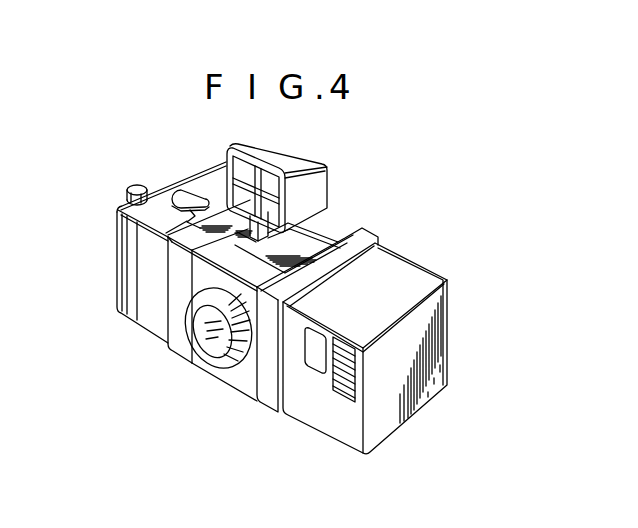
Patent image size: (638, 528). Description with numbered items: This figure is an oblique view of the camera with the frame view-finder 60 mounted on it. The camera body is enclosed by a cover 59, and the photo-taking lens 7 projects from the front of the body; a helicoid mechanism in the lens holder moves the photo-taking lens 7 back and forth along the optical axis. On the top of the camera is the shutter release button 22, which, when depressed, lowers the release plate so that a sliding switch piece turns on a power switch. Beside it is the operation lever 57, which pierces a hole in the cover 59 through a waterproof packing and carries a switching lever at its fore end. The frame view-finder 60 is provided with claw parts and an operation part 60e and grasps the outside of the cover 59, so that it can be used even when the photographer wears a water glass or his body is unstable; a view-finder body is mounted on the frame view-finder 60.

The photo-taking lens 7 is at (215, 348).
The shutter release button 22 is at (135, 185).
The operation lever 57 is at (181, 194).
The cover 59 is at (433, 334).
The frame view-finder 60 is at (266, 395).
The operation part 60e is at (172, 229).